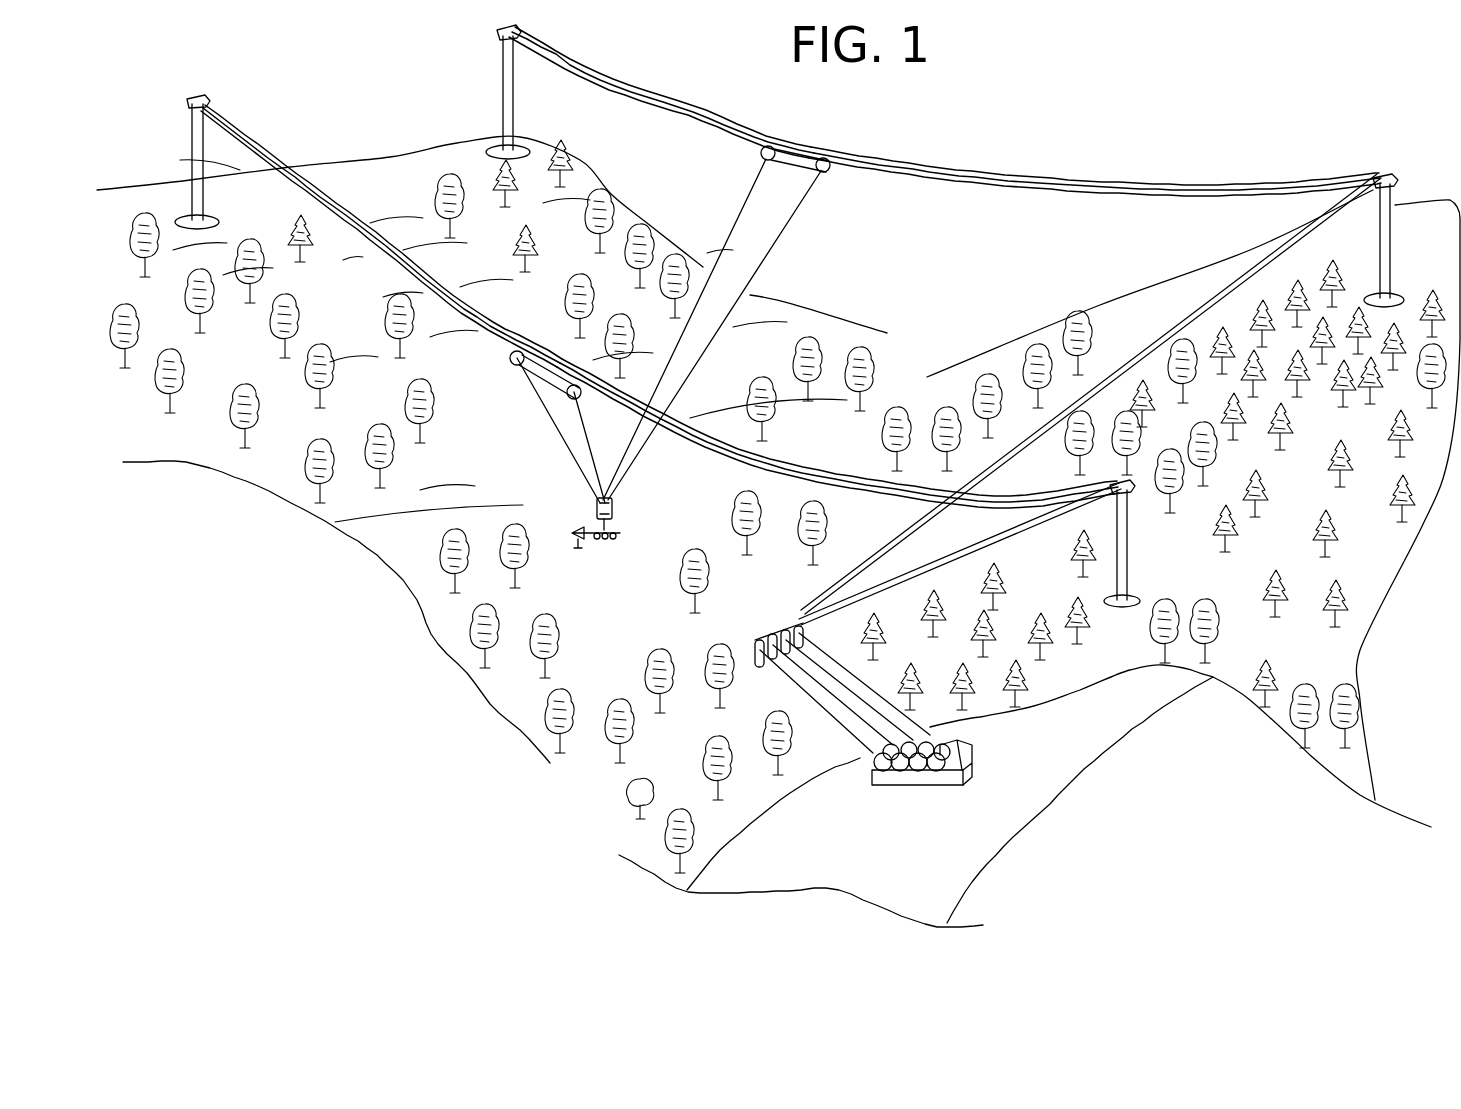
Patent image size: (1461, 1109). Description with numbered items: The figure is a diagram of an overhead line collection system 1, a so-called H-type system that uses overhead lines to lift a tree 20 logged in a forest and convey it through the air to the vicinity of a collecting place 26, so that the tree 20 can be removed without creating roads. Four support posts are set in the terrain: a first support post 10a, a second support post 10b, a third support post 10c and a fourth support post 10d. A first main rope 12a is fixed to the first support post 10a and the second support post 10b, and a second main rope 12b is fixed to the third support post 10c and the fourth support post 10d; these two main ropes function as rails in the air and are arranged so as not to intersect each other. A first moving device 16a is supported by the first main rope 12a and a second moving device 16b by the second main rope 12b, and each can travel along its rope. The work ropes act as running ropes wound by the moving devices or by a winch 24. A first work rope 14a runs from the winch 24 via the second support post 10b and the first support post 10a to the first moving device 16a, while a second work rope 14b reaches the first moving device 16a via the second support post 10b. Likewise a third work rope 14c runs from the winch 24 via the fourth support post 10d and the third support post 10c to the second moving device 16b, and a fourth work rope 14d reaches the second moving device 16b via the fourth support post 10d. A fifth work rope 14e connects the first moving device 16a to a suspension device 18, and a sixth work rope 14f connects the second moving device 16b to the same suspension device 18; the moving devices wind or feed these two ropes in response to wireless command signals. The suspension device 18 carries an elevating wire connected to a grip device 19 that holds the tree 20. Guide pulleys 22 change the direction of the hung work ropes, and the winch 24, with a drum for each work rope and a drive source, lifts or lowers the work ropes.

The overhead line collection system 1 is at (997, 120).
The first support post 10a is at (192, 160).
The second support post 10b is at (1127, 533).
The third support post 10c is at (503, 77).
The fourth support post 10d is at (1388, 243).
The first main rope 12a is at (660, 306).
The second main rope 12b is at (945, 123).
The first work rope 14a is at (373, 263).
The second work rope 14b is at (723, 453).
The third work rope 14c is at (660, 113).
The fourth work rope 14d is at (917, 173).
The fifth work rope 14e is at (550, 433).
The sixth work rope 14f is at (773, 250).
The first moving device 16a is at (520, 375).
The second moving device 16b is at (791, 181).
The suspension device 18 is at (595, 513).
The grip device 19 is at (618, 520).
The tree 20 is at (578, 549).
The guide pulleys 22 is at (770, 630).
The winch 24 is at (920, 783).
The collecting place 26 is at (1110, 735).